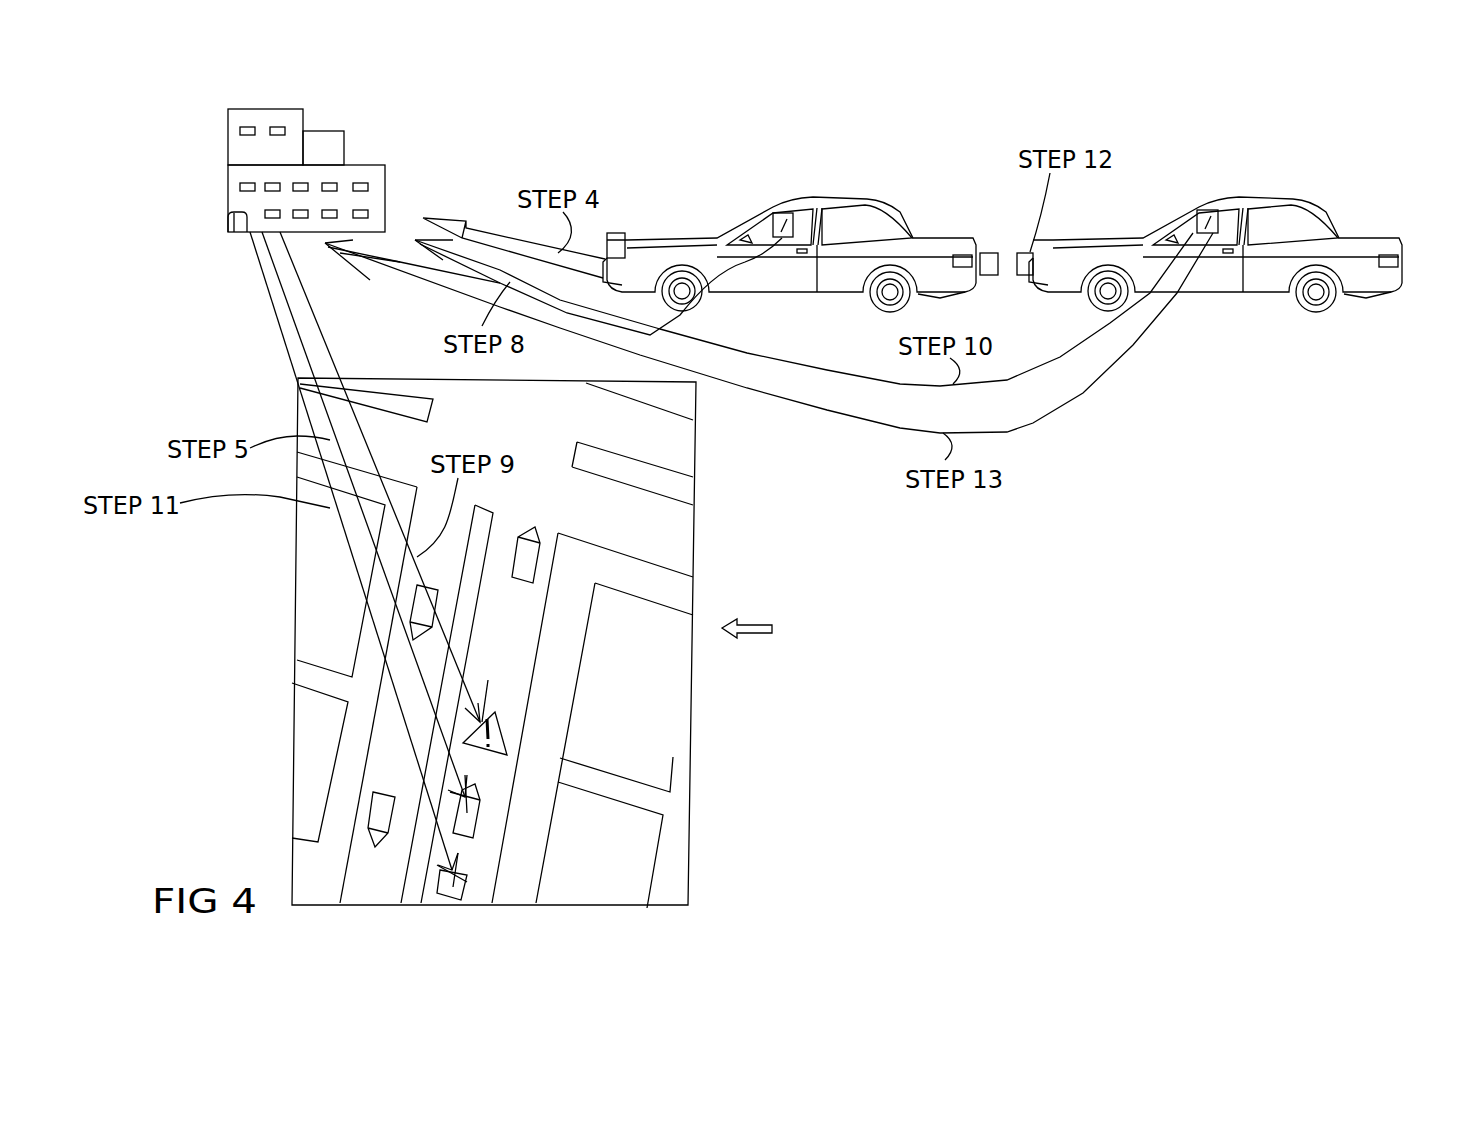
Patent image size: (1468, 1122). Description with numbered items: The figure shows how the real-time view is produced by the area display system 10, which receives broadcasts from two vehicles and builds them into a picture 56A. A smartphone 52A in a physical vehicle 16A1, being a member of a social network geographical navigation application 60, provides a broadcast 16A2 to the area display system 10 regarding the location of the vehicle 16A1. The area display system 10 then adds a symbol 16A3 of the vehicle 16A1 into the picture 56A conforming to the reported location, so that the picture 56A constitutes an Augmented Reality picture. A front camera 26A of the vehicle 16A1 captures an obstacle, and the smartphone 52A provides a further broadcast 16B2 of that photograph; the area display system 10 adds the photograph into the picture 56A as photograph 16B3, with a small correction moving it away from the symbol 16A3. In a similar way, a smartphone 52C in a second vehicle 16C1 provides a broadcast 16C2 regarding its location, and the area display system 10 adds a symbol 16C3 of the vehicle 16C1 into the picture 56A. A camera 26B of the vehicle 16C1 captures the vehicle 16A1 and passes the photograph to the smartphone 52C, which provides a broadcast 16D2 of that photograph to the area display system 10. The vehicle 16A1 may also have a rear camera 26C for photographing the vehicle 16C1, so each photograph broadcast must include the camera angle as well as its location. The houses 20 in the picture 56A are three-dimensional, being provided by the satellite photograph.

The area display system 10 is at (240, 208).
The social network geographical navigation application 60 is at (330, 150).
The houses 20 is at (310, 638).
The physical vehicle 16A1 is at (865, 199).
The vehicle 16C1 is at (1290, 199).
The camera 26A is at (607, 232).
The camera 26B is at (1033, 253).
The rear camera 26C is at (987, 254).
The smartphone 52A is at (782, 213).
The smartphone 52C is at (1206, 210).
The broadcast 16A2 is at (509, 245).
The broadcast 16B2 is at (500, 270).
The broadcast 16C2 is at (825, 372).
The broadcast 16D2 is at (840, 410).
The photograph 16B3 is at (500, 711).
The symbol 16A3 is at (480, 820).
The symbol 16C3 is at (462, 893).
The picture 56A is at (775, 633).